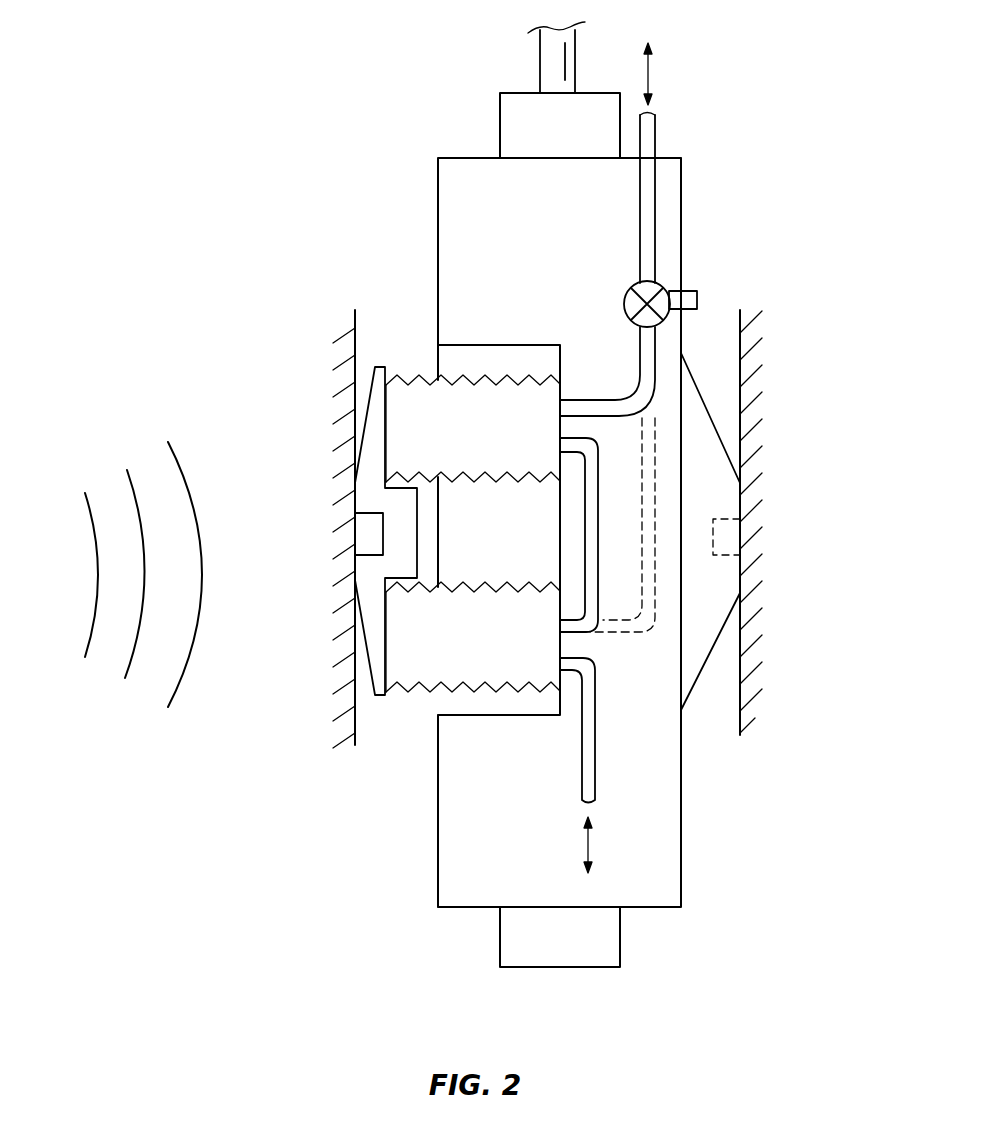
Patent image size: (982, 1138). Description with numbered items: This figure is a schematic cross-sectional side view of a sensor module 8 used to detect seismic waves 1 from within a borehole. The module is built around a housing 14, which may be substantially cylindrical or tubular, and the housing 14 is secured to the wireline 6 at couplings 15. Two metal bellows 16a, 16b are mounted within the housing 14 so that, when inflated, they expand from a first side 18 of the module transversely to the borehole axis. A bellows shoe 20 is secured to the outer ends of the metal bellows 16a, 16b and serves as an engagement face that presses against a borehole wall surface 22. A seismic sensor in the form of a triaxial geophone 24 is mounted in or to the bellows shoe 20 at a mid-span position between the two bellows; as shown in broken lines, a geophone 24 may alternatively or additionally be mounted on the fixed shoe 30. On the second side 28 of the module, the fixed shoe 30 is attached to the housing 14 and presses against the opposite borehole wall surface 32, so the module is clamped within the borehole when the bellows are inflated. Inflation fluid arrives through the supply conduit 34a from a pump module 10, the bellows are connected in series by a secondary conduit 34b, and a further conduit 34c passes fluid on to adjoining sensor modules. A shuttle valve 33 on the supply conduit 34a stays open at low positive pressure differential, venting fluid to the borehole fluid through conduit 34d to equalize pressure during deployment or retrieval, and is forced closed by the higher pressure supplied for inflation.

The seismic waves 1 is at (180, 683).
The wireline 6 is at (540, 62).
The sensor module 8 is at (317, 190).
The pump module 10 is at (648, 61).
The housing 14 is at (667, 909).
The couplings 15 is at (500, 125).
The metal bellows 16a is at (417, 375).
The metal bellows 16b is at (418, 693).
The first side 18 is at (437, 843).
The bellows shoe 20 is at (365, 417).
The borehole wall surface 22 is at (360, 665).
The triaxial geophone 24 is at (370, 532).
The second side 28 is at (682, 225).
The fixed shoe 30 is at (707, 413).
The opposite borehole wall surface 32 is at (730, 700).
The shuttle valve 33 is at (660, 288).
The supply conduit 34a is at (658, 140).
The secondary conduit 34b is at (593, 634).
The further conduit 34c is at (655, 485).
The conduit 34d is at (698, 302).